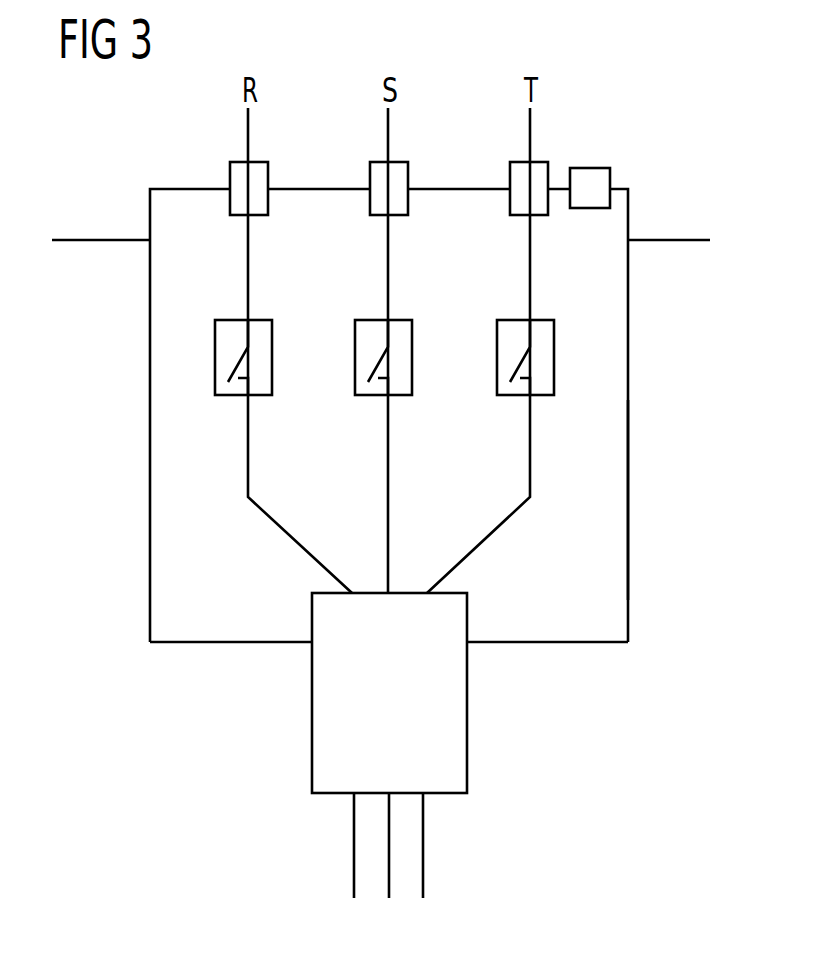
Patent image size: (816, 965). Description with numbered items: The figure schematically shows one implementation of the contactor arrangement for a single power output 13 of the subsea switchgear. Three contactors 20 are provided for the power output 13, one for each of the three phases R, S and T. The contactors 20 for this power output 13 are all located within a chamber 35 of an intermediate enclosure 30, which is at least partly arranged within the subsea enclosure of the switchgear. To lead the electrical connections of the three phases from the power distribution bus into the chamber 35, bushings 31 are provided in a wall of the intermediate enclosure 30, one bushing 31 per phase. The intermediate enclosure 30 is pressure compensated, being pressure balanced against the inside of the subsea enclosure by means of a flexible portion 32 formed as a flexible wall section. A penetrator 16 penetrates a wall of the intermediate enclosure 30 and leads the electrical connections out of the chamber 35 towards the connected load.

The power output 13 is at (425, 796).
The penetrator 16 is at (312, 720).
The contactor 20 is at (272, 356).
The intermediate enclosure 30 is at (150, 440).
The bushing 31 is at (230, 173).
The flexible portion 32 is at (590, 168).
The chamber 35 is at (612, 502).